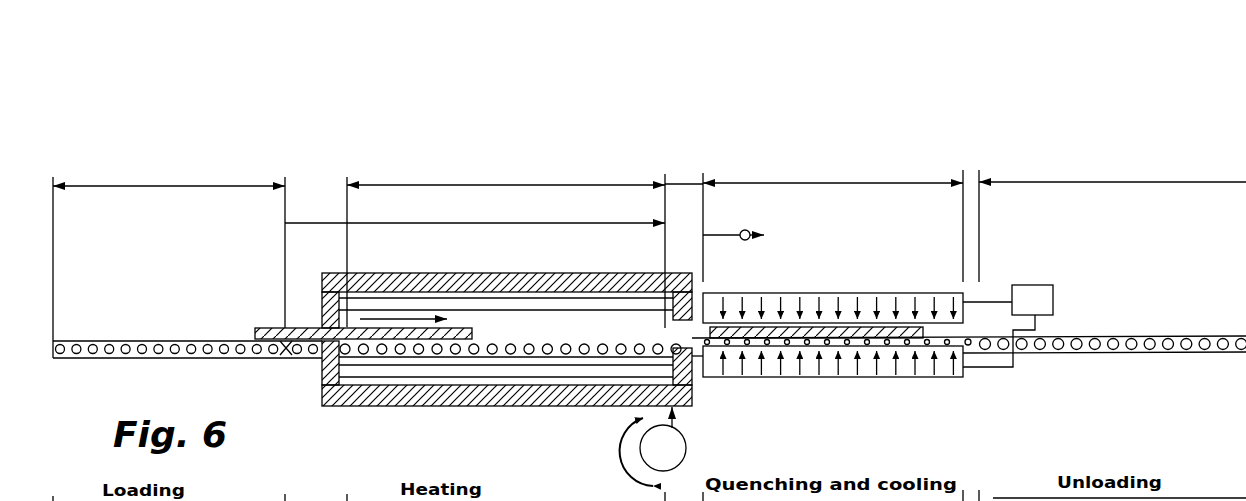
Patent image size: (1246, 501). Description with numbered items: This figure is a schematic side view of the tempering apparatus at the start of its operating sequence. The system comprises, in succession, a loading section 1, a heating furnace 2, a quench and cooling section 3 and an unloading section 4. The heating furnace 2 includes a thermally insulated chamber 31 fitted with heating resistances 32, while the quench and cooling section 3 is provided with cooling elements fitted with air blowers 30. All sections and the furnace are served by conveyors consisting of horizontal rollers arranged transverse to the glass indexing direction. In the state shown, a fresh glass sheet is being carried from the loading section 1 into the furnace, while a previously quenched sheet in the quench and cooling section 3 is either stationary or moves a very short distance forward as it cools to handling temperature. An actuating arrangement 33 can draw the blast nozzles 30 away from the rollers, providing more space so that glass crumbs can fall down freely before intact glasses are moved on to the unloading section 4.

The loading section 1 is at (222, 138).
The heating furnace 2 is at (540, 135).
The quench and cooling section 3 is at (855, 135).
The unloading section 4 is at (1120, 135).
The air blowers 30 is at (880, 303).
The thermally insulated chamber 31 is at (541, 273).
The heating resistances 32 is at (527, 304).
The actuating arrangement 33 is at (1008, 326).